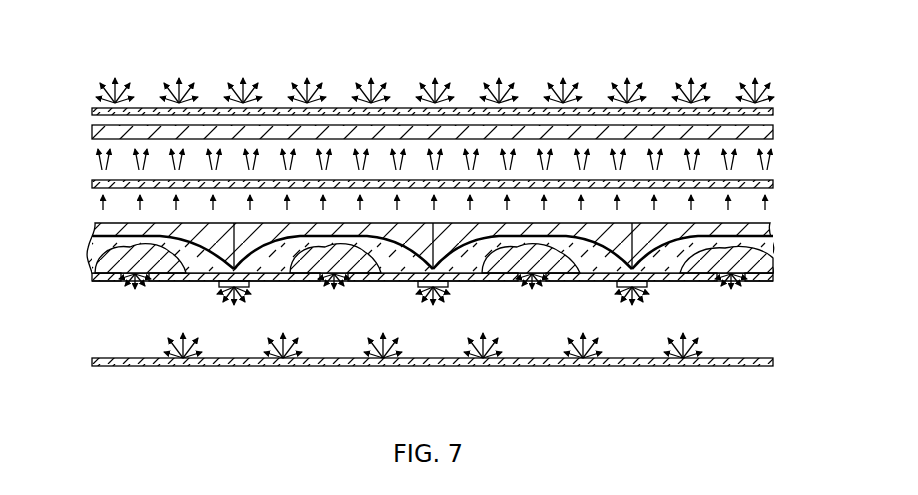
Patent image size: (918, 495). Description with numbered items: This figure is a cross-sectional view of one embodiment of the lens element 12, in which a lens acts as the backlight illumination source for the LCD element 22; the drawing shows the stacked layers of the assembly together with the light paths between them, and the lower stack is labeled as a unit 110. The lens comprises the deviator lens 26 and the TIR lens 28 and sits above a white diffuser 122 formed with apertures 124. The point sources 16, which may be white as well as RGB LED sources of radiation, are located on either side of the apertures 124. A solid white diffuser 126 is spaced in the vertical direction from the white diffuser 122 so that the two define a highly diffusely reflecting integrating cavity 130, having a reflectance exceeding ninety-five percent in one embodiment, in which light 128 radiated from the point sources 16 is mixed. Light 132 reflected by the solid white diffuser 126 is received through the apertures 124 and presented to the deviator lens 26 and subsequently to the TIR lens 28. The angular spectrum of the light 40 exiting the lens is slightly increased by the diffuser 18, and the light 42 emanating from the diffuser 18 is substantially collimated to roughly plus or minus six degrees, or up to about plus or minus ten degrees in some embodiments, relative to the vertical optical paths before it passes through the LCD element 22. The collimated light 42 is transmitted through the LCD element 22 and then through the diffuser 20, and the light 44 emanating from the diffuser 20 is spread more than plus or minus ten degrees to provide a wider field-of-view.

The lens element 12 is at (578, 46).
The point sources 16 is at (618, 284).
The diffuser 18 is at (773, 184).
The diffuser 20 is at (773, 112).
The LCD element 22 is at (773, 132).
The deviator lens 26 is at (768, 248).
The TIR lens 28 is at (765, 223).
The light 40 is at (96, 210).
The light 42 is at (96, 165).
The light 44 is at (92, 93).
The light source module 110 is at (70, 244).
The white diffuser 122 is at (773, 277).
The apertures 124 is at (762, 282).
The solid white diffuser 126 is at (92, 361).
The light 128 is at (648, 285).
The reflecting integrating cavity 130 is at (93, 322).
The light 132 is at (388, 334).